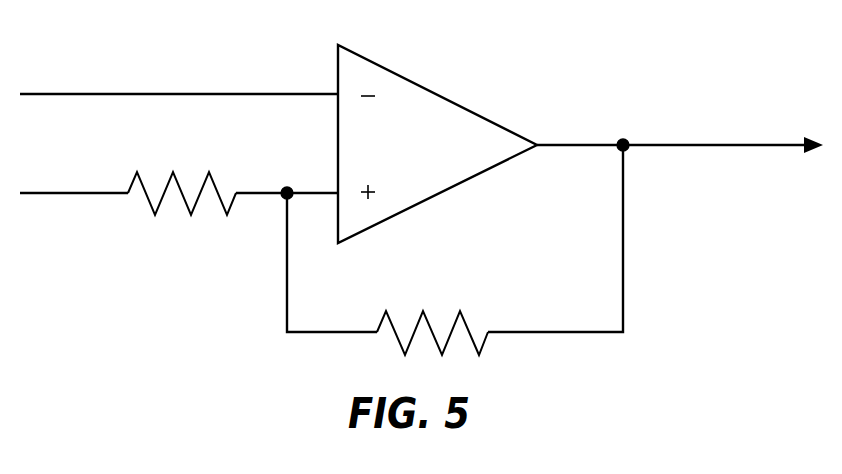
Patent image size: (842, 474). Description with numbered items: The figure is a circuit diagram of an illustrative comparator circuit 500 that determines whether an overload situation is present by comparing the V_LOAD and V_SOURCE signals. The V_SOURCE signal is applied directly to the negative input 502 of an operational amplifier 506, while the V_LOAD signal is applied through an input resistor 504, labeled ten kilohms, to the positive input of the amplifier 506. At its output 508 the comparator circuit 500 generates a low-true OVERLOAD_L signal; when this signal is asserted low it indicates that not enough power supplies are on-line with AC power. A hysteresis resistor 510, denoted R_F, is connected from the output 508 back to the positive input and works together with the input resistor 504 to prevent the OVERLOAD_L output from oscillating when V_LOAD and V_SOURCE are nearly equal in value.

The comparator circuit 500 is at (641, 90).
The negative input 502 is at (236, 93).
The input resistor 504 is at (155, 228).
The operational amplifier 506 is at (427, 162).
The output 508 is at (568, 144).
The hysteresis resistor 510 is at (470, 311).